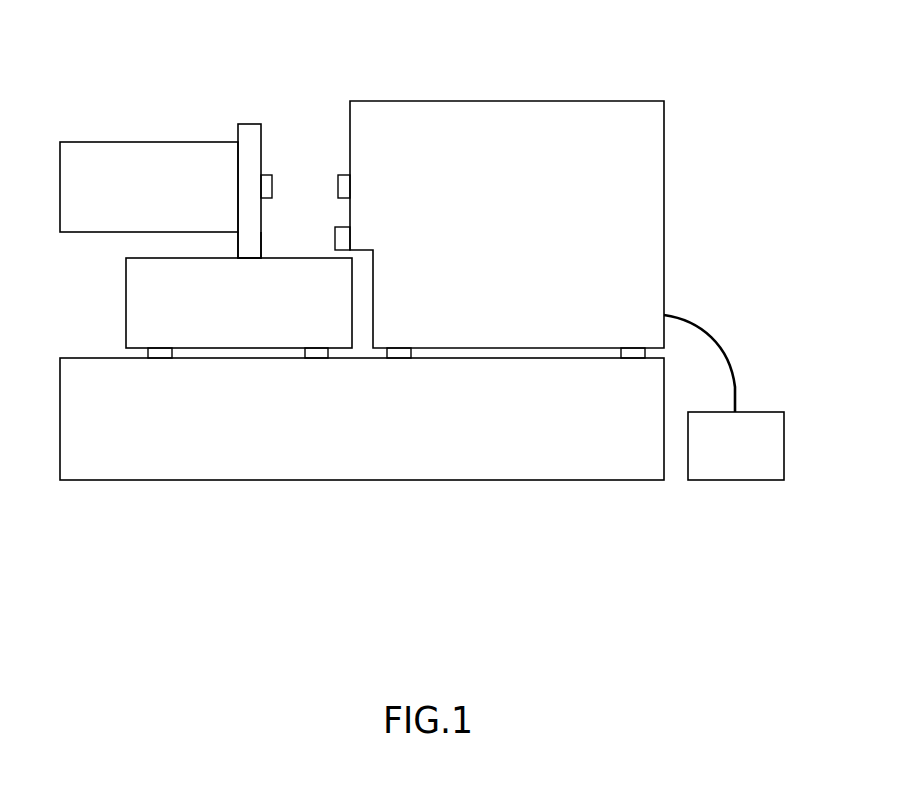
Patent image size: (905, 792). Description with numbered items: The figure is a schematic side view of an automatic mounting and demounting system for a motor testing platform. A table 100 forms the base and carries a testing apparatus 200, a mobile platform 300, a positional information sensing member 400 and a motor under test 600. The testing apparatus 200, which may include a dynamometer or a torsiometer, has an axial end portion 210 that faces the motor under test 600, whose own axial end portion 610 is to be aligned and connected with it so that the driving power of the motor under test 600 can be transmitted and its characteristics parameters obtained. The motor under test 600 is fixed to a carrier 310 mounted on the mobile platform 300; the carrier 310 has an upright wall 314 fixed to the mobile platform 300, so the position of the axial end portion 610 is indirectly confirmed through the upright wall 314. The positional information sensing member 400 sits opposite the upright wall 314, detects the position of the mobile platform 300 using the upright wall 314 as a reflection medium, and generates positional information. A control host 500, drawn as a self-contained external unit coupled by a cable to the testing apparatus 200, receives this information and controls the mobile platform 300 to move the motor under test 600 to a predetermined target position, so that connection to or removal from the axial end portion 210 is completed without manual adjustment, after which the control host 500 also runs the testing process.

The table 100 is at (632, 453).
The testing apparatus 200 is at (580, 100).
The axial end portion of the testing apparatus 210 is at (343, 172).
The mobile platform 300 is at (239, 357).
The carrier 310 is at (266, 254).
The upright wall 314 is at (240, 243).
The positional information sensing member 400 is at (336, 250).
The control host 500 is at (762, 408).
The motor under test 600 is at (90, 142).
The axial end portion of the motor under test 610 is at (271, 174).